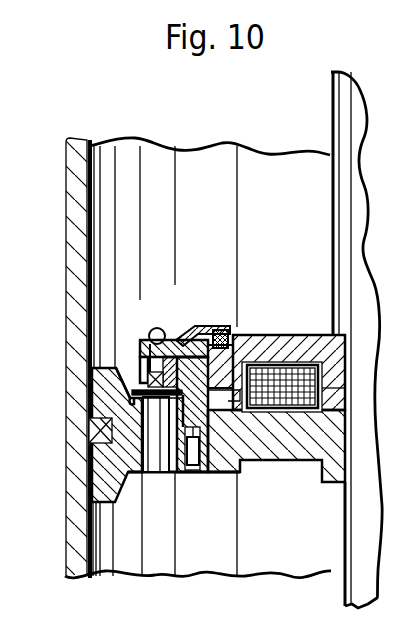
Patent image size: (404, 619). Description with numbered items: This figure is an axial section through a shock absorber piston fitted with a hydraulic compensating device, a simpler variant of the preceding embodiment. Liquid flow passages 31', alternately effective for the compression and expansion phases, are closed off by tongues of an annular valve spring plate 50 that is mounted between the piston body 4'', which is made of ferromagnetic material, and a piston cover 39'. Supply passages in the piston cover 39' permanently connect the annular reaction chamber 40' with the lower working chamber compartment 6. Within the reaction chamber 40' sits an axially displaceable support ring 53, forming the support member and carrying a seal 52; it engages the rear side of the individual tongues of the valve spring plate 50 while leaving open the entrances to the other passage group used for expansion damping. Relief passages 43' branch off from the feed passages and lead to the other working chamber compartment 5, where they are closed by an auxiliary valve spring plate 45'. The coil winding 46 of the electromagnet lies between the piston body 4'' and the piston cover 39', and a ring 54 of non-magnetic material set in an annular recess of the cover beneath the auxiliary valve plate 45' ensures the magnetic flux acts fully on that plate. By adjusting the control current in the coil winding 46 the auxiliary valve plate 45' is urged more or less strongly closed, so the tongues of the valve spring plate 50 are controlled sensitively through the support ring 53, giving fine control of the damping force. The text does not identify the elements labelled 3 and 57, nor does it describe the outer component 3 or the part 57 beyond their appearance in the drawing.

The panel 3 is at (367, 520).
The working chamber compartment 5 is at (106, 210).
The lower working chamber compartment 6 is at (110, 515).
The liquid flow passage 31' is at (96, 434).
The piston cover 39' is at (222, 352).
The reaction chamber 40' is at (142, 342).
The relief passage 43' is at (177, 335).
The auxiliary valve spring plate 45' is at (203, 311).
The coil winding 46 is at (262, 372).
The annular valve spring plate 50 is at (136, 402).
The seal 52 is at (138, 365).
The support ring 53 is at (128, 396).
The ring of non-magnetic material 54 is at (222, 328).
The pin 57 is at (193, 466).
The piston body 4'' is at (276, 460).